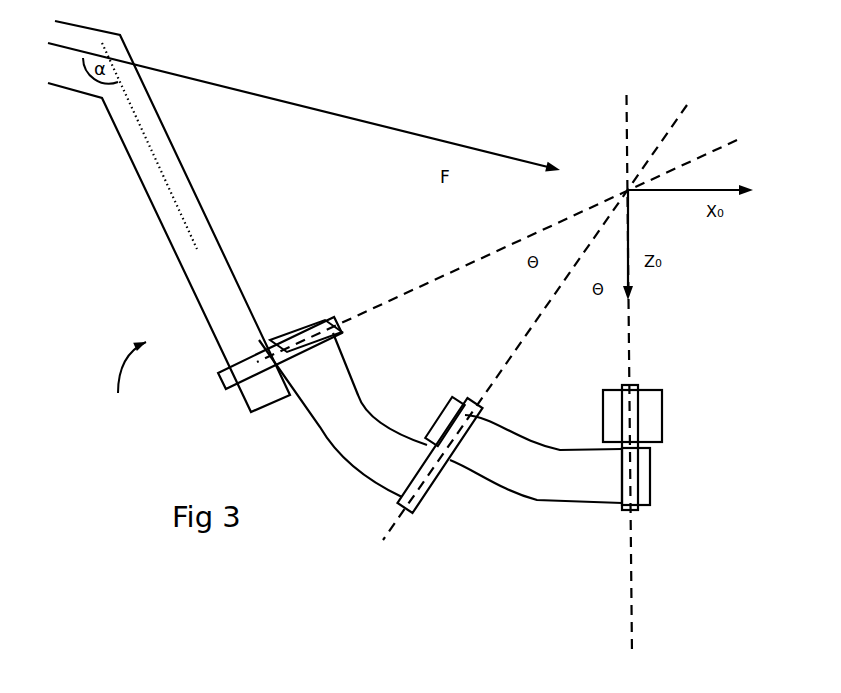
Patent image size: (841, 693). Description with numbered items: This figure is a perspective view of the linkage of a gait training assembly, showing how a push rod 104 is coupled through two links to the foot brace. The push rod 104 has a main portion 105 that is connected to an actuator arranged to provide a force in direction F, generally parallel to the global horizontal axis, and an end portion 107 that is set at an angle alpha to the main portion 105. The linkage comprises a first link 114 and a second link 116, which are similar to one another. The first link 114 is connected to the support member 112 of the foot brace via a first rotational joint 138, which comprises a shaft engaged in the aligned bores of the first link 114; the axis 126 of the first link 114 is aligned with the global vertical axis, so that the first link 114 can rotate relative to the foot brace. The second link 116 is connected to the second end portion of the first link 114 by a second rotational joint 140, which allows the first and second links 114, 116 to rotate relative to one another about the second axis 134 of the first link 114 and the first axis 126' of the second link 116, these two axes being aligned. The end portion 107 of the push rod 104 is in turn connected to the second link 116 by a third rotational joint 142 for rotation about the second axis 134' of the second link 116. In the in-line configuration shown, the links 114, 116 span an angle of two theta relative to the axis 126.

The push rod 104 is at (123, 389).
The main portion 105 is at (118, 202).
The end portion 107 is at (230, 294).
The support member 112 is at (647, 407).
The first link 114 is at (554, 482).
The second link 116 is at (379, 446).
The axis of the first link 126 is at (676, 375).
The first axis of the second link 126' is at (457, 434).
The second axis of the first link 134 is at (609, 258).
The second axis of the second link 134' is at (497, 251).
The first rotational joint 138 is at (637, 465).
The second rotational joint 140 is at (430, 480).
The third rotational joint 142 is at (257, 375).